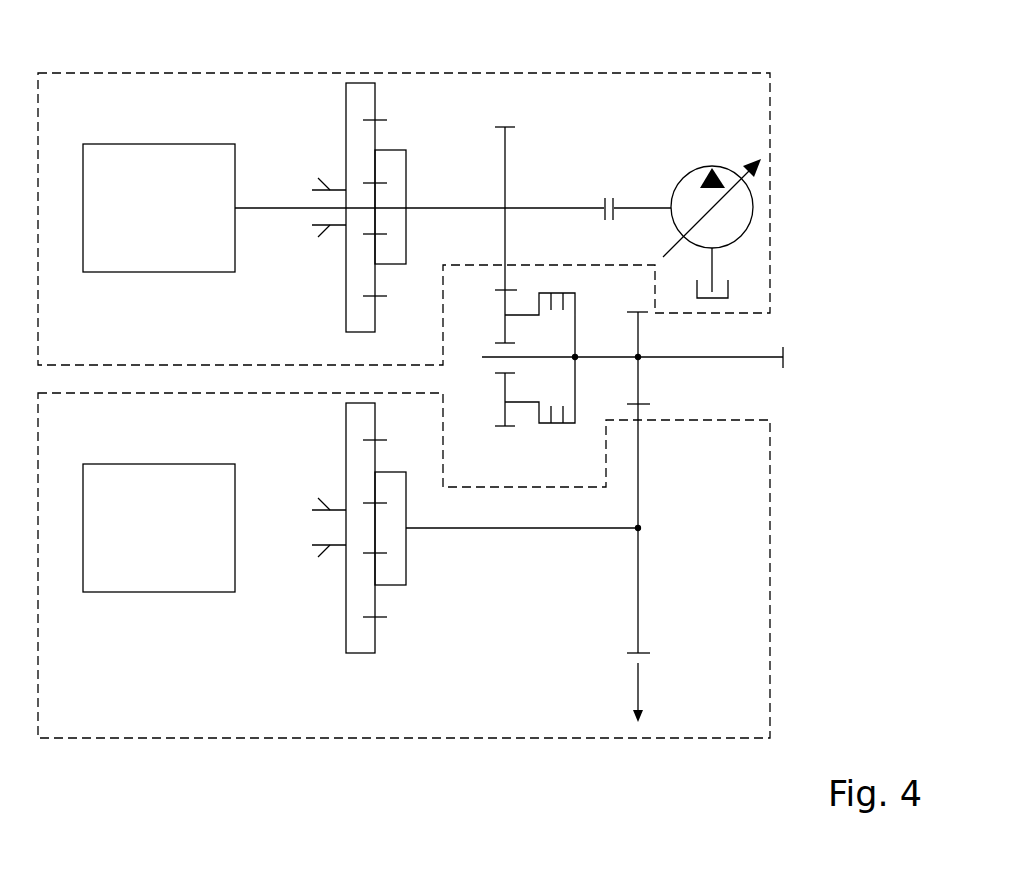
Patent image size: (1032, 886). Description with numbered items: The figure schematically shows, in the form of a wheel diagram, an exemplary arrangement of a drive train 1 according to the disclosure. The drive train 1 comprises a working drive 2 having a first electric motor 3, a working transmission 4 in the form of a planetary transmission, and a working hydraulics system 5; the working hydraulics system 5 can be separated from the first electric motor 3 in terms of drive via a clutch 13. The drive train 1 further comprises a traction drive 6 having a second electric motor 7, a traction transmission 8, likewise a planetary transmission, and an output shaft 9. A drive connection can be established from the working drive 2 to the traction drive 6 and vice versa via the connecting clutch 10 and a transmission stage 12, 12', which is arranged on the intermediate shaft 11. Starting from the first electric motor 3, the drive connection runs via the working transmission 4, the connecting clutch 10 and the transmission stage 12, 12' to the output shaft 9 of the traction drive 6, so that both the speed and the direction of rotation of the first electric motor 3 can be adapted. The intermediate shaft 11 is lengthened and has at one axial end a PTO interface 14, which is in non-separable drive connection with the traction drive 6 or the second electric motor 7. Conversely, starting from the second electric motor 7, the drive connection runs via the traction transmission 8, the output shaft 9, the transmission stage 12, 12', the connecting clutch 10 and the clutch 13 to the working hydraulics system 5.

The drive train 1 is at (905, 348).
The working drive 2 is at (724, 86).
The first electric motor 3 is at (171, 223).
The working transmission 4 is at (426, 152).
The working hydraulics system 5 is at (682, 168).
The traction drive 6 is at (753, 485).
The second electric motor 7 is at (171, 547).
The traction transmission 8 is at (394, 590).
The output shaft 9 is at (602, 530).
The connecting clutch 10 is at (538, 426).
The intermediate shaft 11 is at (760, 356).
The transmission stage 12 is at (677, 366).
The transmission stage 12' is at (455, 235).
The clutch 13 is at (603, 204).
The PTO interface 14 is at (786, 362).